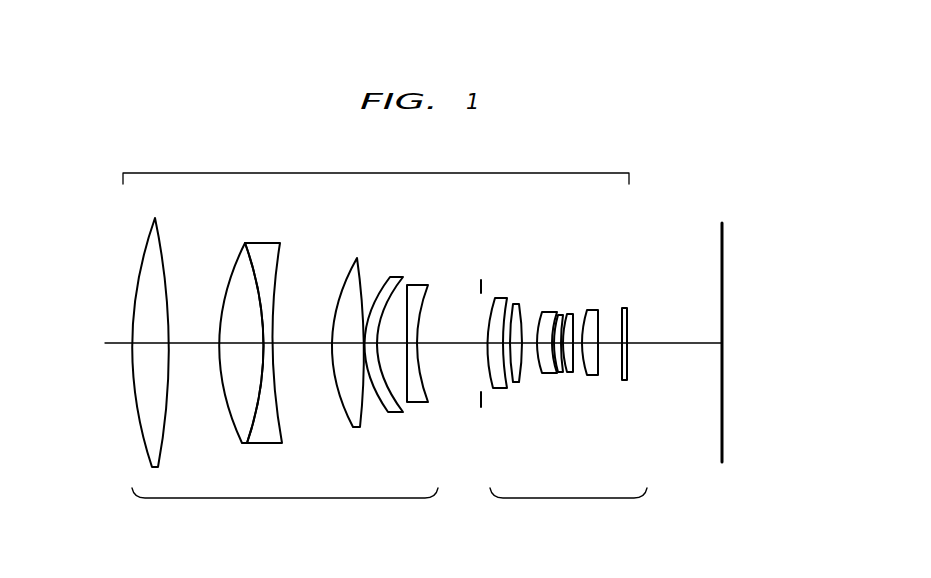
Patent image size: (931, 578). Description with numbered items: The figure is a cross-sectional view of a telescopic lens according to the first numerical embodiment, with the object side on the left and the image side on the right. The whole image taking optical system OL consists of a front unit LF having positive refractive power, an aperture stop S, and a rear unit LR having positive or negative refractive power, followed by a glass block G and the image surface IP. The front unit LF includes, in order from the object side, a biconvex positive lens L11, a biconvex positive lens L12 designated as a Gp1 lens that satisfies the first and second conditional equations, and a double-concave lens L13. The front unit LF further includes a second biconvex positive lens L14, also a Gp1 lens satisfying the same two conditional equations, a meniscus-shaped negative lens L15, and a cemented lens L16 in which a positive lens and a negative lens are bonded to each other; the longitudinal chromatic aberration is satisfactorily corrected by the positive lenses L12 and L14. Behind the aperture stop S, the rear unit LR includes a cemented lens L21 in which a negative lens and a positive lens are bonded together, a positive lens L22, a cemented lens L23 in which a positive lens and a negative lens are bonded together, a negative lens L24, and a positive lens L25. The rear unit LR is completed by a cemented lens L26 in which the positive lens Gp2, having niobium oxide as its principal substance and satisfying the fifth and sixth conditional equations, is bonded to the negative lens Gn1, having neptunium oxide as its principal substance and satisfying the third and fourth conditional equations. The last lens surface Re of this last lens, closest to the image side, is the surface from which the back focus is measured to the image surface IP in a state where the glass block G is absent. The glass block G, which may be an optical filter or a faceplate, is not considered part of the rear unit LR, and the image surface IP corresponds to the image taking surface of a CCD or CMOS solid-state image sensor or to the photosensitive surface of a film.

The optical system OL is at (376, 162).
The biconvex positive lens L11 is at (151, 331).
The biconvex positive lens L12 is at (245, 243).
The double-concave lens L13 is at (265, 243).
The biconvex positive lens L14 is at (357, 258).
The meniscus-shaped negative lens L15 is at (398, 277).
The cemented lens L16 is at (420, 285).
The positive lens Gp1 is at (240, 420).
The front unit LF is at (285, 510).
The aperture stop S is at (482, 258).
The cemented lens L21 is at (497, 298).
The positive lens L22 is at (522, 380).
The cemented lens L23 is at (548, 312).
The negative lens L24 is at (561, 314).
The positive lens L25 is at (570, 314).
The cemented lens L26 is at (596, 310).
The glass block G is at (624, 296).
The last lens surface Re is at (600, 363).
The positive lens Gp2 is at (585, 372).
The negative lens Gn1 is at (601, 365).
The rear unit LR is at (568, 510).
The image surface IP is at (720, 240).